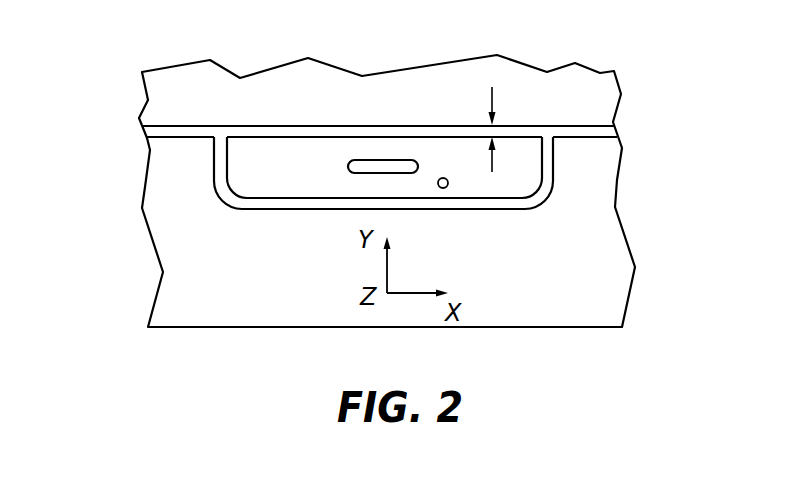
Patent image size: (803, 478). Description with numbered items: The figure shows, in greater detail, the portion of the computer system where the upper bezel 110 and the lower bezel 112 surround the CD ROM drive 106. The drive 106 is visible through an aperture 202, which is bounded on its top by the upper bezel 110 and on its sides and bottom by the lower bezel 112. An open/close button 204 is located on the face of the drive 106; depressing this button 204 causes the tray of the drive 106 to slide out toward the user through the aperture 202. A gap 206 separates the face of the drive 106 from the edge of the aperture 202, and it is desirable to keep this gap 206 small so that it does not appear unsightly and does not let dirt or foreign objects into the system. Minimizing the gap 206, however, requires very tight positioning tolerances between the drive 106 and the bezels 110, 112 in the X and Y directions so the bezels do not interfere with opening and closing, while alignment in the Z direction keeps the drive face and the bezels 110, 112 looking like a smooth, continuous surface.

The upper bezel 110 is at (602, 97).
The lower bezel 112 is at (603, 168).
The CD ROM drive 106 is at (513, 188).
The aperture 202 is at (280, 205).
The open/close button 204 is at (375, 163).
The gap 206 is at (497, 108).